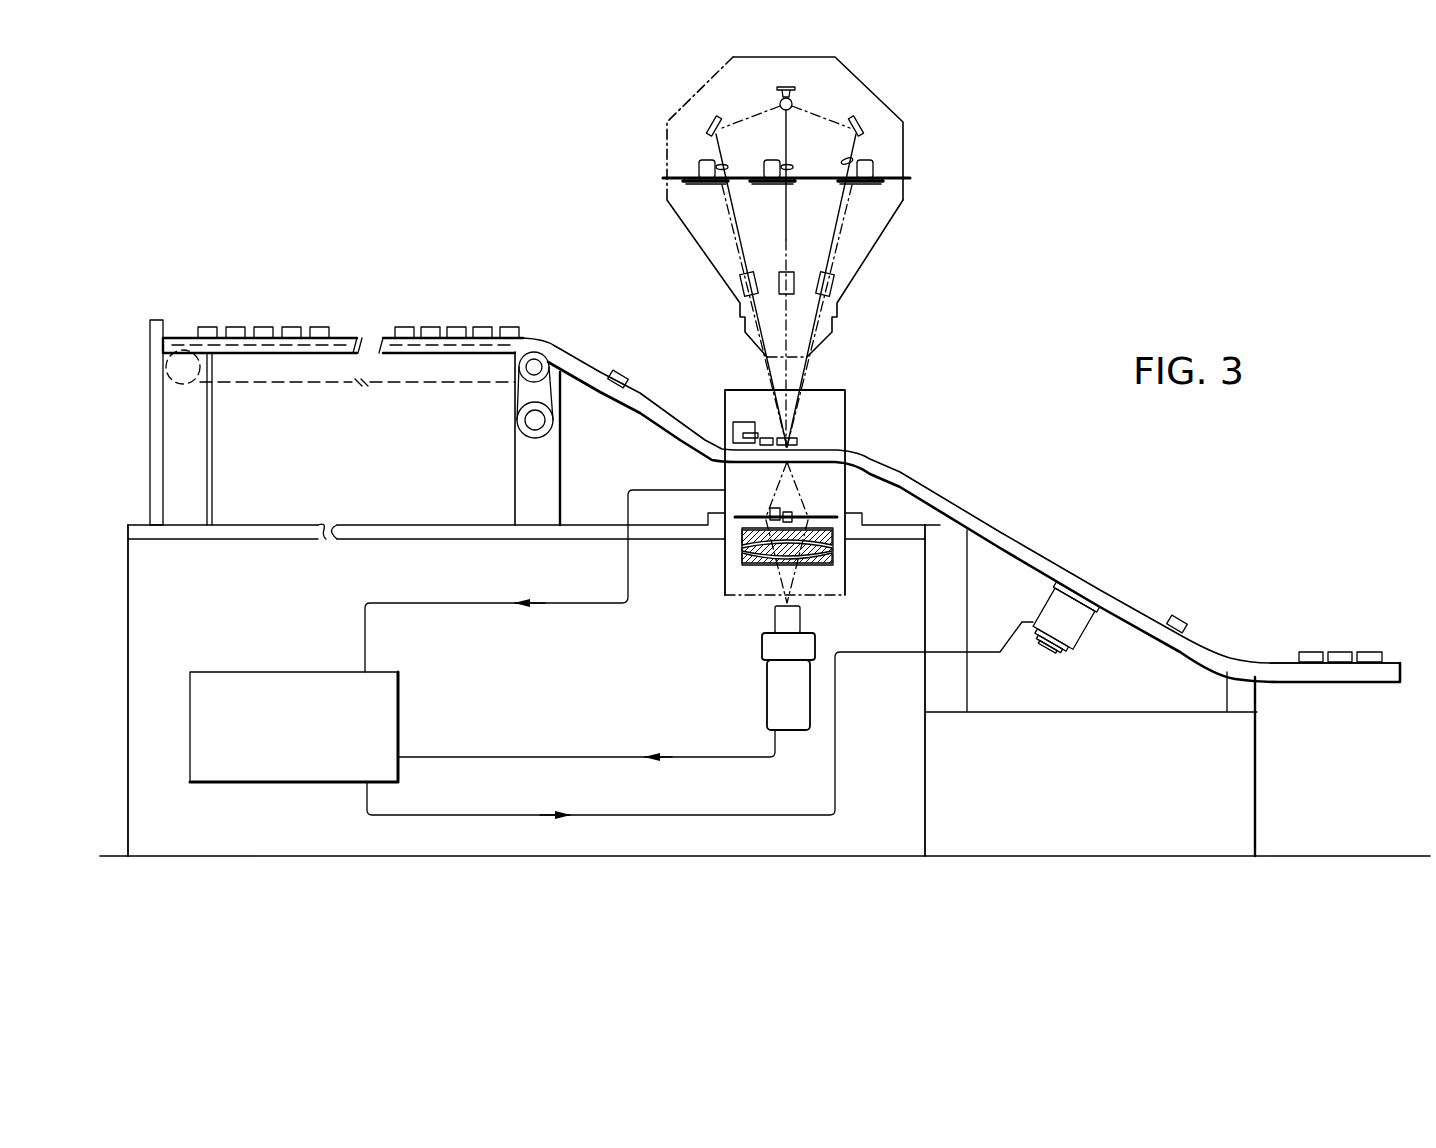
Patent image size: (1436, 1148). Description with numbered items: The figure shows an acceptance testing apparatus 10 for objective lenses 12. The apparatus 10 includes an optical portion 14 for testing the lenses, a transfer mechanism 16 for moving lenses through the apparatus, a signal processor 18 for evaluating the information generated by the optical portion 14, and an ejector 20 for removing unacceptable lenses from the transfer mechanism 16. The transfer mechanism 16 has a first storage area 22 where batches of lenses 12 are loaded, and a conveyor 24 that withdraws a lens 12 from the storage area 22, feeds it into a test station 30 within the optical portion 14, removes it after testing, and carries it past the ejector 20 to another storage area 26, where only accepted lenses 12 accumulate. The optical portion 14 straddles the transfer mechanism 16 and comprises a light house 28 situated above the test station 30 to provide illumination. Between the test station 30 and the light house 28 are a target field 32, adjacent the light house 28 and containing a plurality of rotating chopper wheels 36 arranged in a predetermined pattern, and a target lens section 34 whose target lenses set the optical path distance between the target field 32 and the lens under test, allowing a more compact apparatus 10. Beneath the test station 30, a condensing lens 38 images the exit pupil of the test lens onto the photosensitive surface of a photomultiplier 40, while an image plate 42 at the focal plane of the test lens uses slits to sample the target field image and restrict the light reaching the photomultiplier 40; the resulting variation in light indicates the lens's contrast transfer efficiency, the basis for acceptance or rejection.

The acceptance testing apparatus 10 is at (998, 240).
The lens 12 is at (507, 327).
The optical portion 14 is at (897, 235).
The transfer mechanism 16 is at (645, 303).
The signal processor 18 is at (400, 720).
The ejector 20 is at (1080, 628).
The first storage area 22 is at (302, 316).
The conveyor 24 is at (646, 406).
The storage area 26 is at (1378, 640).
The light house 28 is at (905, 147).
The test station 30 is at (818, 440).
The target field 32 is at (872, 192).
The target lens section 34 is at (863, 262).
The rotating chopper wheels 36 is at (830, 188).
The condensing lens 38 is at (850, 553).
The photomultiplier 40 is at (775, 622).
The image plate 42 is at (812, 510).